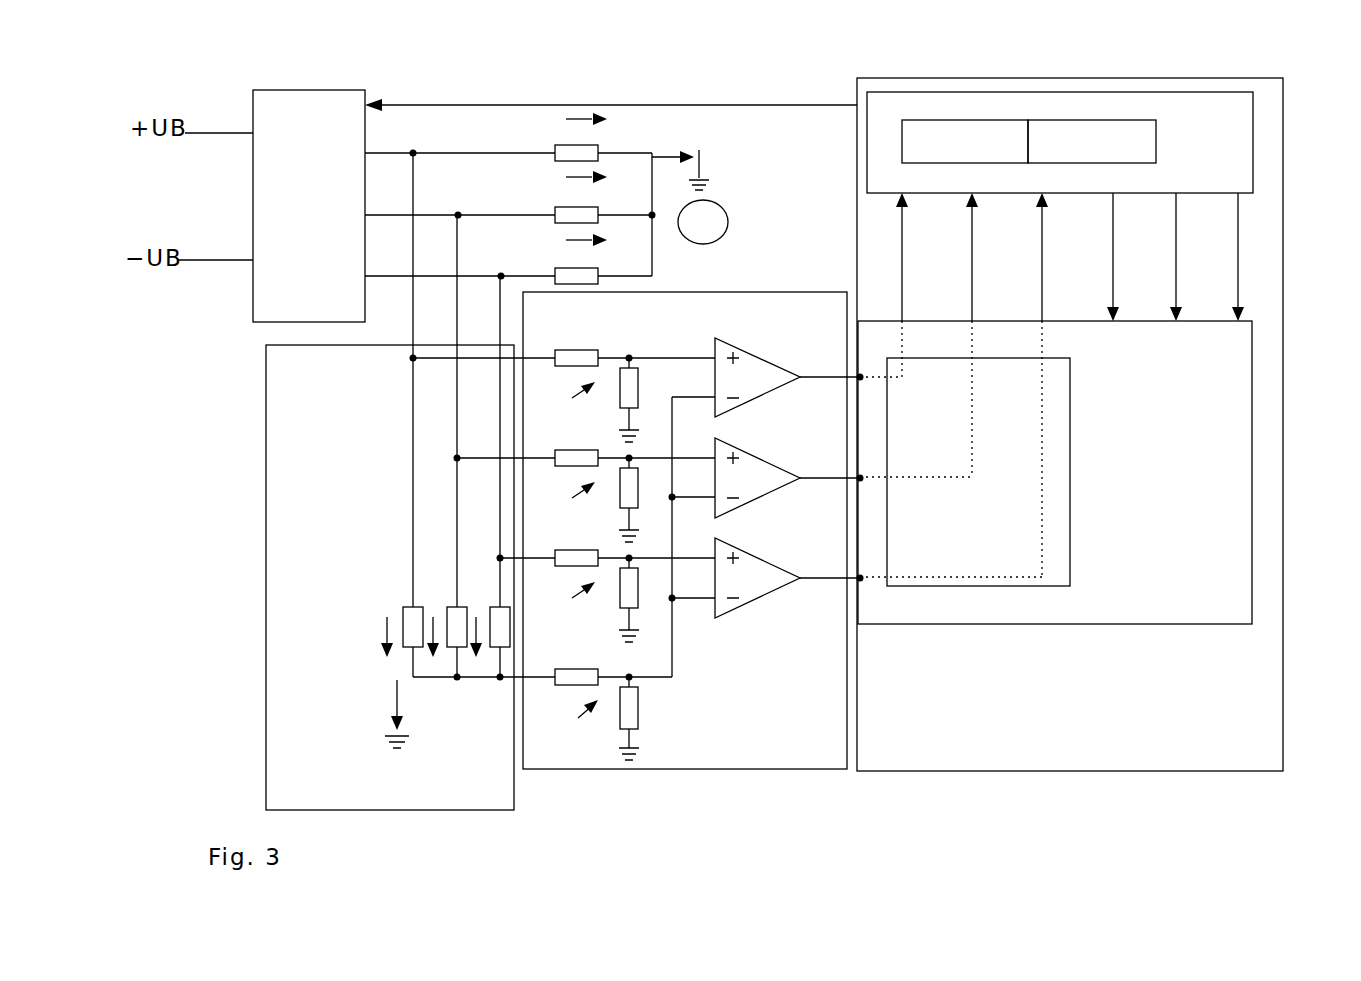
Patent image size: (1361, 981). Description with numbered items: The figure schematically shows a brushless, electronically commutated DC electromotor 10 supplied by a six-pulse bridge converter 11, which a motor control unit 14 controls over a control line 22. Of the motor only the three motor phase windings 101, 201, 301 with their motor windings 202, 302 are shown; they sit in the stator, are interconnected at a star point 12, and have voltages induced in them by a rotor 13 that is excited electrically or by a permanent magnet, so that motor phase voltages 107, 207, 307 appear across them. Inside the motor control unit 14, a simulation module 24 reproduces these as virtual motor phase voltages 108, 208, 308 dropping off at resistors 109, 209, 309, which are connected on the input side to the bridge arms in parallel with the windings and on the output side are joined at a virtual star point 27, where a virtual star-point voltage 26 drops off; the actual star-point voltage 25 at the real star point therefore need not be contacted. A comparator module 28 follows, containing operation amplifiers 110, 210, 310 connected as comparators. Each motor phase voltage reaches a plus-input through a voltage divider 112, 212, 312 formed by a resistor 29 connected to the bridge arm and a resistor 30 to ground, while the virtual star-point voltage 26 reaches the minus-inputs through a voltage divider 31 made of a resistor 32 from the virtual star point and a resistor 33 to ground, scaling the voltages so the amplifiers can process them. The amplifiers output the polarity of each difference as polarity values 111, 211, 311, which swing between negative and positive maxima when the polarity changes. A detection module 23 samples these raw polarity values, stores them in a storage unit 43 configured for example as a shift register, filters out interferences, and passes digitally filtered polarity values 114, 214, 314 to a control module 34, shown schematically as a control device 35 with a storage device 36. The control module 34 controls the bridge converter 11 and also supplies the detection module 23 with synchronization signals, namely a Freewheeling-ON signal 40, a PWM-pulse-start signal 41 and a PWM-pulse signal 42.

The electromotor 10 is at (735, 190).
The bridge converter 11 is at (328, 90).
The star point 12 is at (652, 258).
The rotor 13 is at (728, 222).
The motor control unit 14 is at (1275, 707).
The control line 22 is at (420, 102).
The detection module 23 is at (1175, 600).
The simulation module 24 is at (268, 577).
The actual star-point voltage 25 is at (667, 152).
The virtual star-point voltage 26 is at (388, 710).
The virtual star point 27 is at (478, 680).
The comparator module 28 is at (798, 735).
The resistor 29 is at (573, 365).
The resistor 30 is at (620, 395).
The voltage divider 31 is at (580, 724).
The resistor 32 is at (568, 685).
The resistor 33 is at (640, 708).
The control module 34 is at (1190, 107).
The control device 35 is at (941, 135).
The storage device 36 is at (1078, 130).
The Freewheeling-ON signal 40 is at (1118, 262).
The PWM-pulse-start signal 41 is at (1182, 262).
The PWM-pulse signal 42 is at (1243, 262).
The storage unit 43 is at (1070, 397).
The motor phase winding 101 is at (507, 148).
The motor phase voltage 107 is at (567, 115).
The virtual motor phase voltage 108 is at (382, 630).
The resistor 109 is at (402, 615).
The operation amplifier 110 is at (770, 362).
The polarity value 111 is at (805, 378).
The voltage divider 112 is at (563, 402).
The digitally filtered polarity value 114 is at (907, 293).
The motor phase winding 201 is at (518, 207).
The motor winding 202 is at (538, 148).
The motor phase voltage 207 is at (607, 177).
The virtual motor phase voltage 208 is at (423, 653).
The resistor 209 is at (437, 607).
The operation amplifier 210 is at (770, 462).
The polarity value 211 is at (805, 478).
The voltage divider 212 is at (563, 499).
The digitally filtered polarity value 214 is at (977, 293).
The motor phase winding 301 is at (633, 288).
The motor winding 302 is at (588, 290).
The motor phase voltage 307 is at (566, 240).
The virtual motor phase voltage 308 is at (476, 632).
The resistor 309 is at (510, 643).
The operation amplifier 310 is at (770, 552).
The polarity value 311 is at (805, 567).
The voltage divider 312 is at (563, 601).
The digitally filtered polarity value 314 is at (1050, 293).